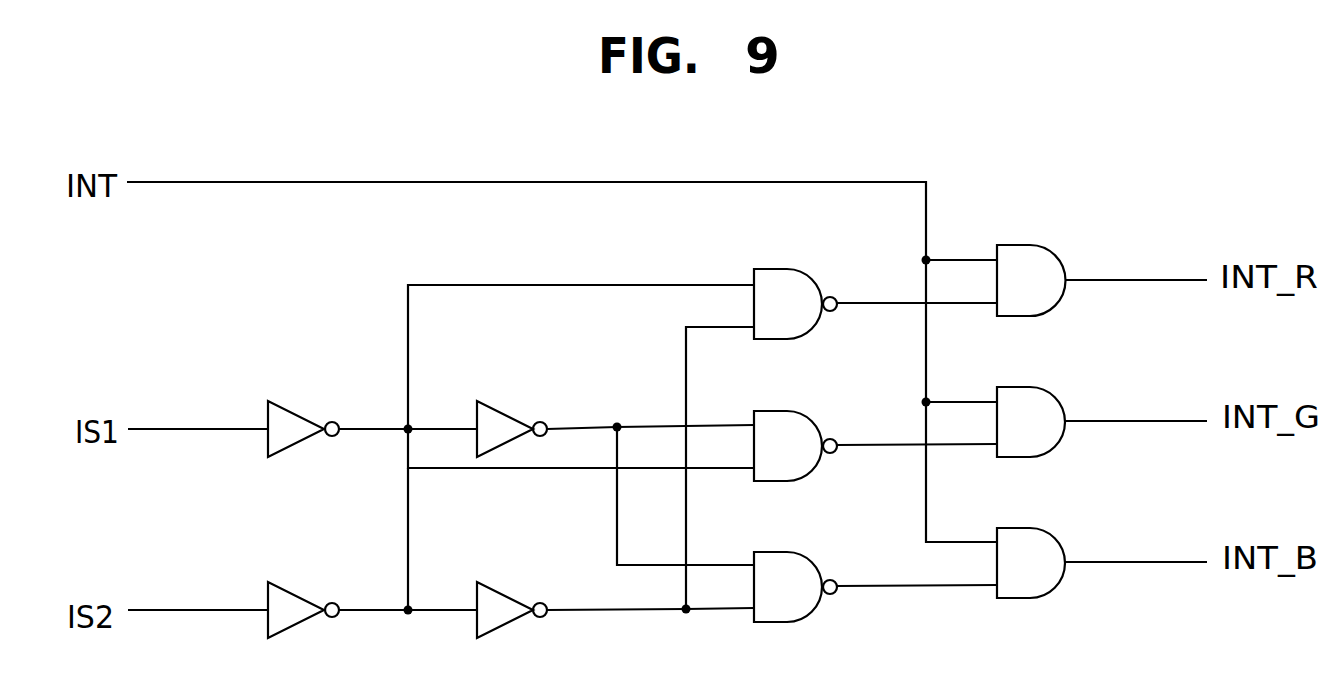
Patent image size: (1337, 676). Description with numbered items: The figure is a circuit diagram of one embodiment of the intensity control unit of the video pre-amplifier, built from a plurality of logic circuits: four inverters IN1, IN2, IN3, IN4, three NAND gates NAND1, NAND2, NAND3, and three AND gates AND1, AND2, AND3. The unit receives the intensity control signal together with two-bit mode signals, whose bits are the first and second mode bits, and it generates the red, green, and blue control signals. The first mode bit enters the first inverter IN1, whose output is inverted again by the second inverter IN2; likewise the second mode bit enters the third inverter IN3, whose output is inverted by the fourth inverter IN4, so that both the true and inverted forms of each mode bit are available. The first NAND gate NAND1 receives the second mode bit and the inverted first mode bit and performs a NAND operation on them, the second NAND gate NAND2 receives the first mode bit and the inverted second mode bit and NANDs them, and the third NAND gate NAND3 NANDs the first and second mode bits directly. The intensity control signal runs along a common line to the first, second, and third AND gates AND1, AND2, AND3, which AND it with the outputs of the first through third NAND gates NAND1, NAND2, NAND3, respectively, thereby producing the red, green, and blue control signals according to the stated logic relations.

The first inverter IN1 is at (303, 410).
The second inverter IN2 is at (512, 410).
The third inverter IN3 is at (303, 591).
The fourth inverter IN4 is at (512, 591).
The first NAND gate NAND1 is at (788, 282).
The second NAND gate NAND2 is at (788, 424).
The third NAND gate NAND3 is at (788, 564).
The first AND gate AND1 is at (1032, 259).
The second AND gate AND2 is at (1031, 400).
The third AND gate AND3 is at (1031, 541).